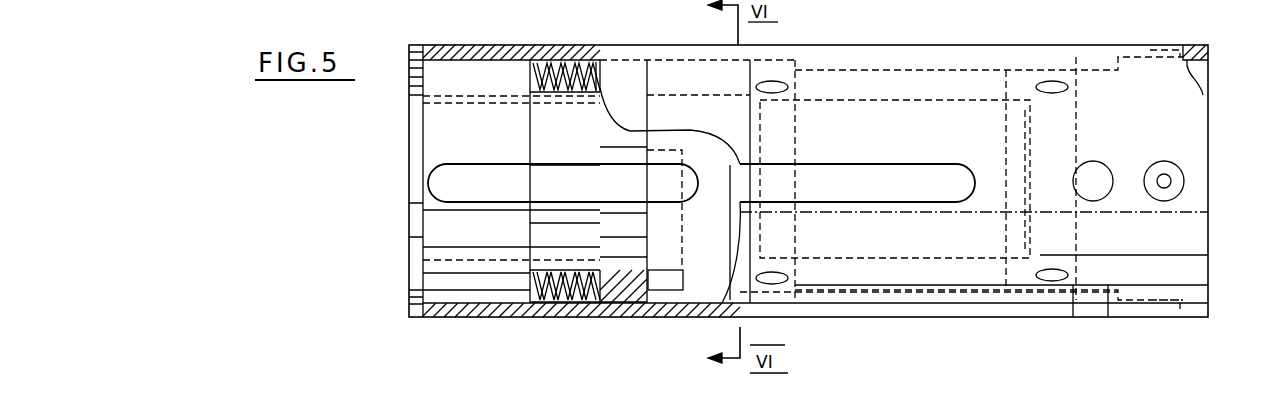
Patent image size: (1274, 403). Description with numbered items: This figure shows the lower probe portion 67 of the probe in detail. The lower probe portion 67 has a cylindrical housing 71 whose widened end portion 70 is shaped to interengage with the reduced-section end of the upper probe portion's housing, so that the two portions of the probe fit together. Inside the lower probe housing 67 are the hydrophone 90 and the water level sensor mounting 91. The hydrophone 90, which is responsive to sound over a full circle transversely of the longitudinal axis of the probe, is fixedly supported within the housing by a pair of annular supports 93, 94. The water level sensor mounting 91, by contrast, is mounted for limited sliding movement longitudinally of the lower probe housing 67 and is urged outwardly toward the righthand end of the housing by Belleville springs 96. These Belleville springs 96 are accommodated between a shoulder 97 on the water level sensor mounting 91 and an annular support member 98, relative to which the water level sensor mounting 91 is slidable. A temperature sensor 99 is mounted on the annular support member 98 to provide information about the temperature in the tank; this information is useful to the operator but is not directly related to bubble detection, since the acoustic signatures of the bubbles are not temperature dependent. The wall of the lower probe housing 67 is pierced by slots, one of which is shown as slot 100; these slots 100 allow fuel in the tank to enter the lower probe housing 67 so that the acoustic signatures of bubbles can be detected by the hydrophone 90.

The lower probe portion 67 is at (975, 45).
The widened end portion 70 is at (1208, 62).
The cylindrical housing 71 is at (1053, 45).
The hydrophone 90 is at (868, 100).
The water level sensor mounting 91 is at (735, 229).
The annular support 93 is at (812, 275).
The annular support 94 is at (990, 274).
The Belleville springs 96 is at (568, 62).
The shoulder 97 is at (530, 85).
The annular support member 98 is at (596, 62).
The temperature sensor 99 is at (668, 284).
The slot 100 is at (905, 160).